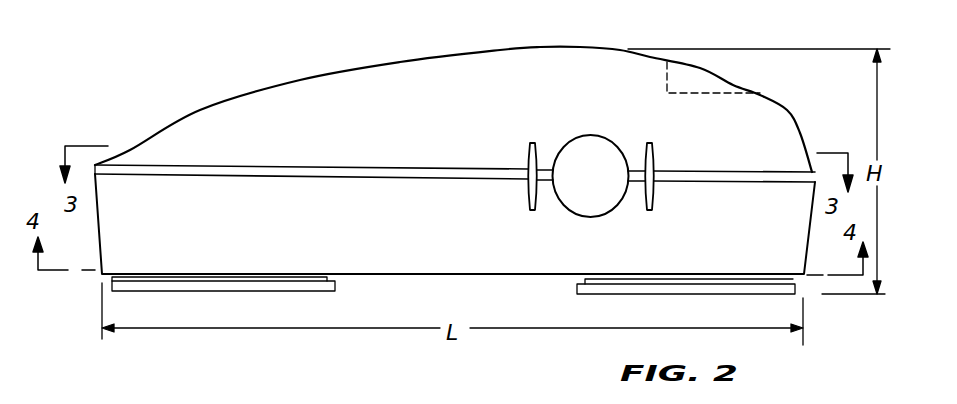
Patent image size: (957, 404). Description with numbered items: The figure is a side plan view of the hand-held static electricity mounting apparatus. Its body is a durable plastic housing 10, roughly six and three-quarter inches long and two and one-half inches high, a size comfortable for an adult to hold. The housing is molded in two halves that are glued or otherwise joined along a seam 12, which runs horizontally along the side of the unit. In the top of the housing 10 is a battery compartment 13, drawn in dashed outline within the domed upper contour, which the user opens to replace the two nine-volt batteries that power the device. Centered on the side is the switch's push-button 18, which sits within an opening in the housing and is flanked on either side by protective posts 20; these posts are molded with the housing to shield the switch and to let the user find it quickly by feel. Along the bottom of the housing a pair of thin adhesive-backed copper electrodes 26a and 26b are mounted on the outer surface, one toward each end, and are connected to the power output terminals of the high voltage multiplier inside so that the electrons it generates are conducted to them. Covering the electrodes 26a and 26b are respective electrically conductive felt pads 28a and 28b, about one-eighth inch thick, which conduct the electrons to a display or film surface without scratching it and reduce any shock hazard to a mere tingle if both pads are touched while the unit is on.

The housing 10 is at (823, 195).
The seam 12 is at (110, 171).
The battery compartment 13 is at (692, 78).
The push-button 18 is at (607, 187).
The protective posts 20 is at (528, 162).
The copper electrode 26a is at (108, 279).
The copper electrode 26b is at (798, 284).
The electrically conductive felt pad 28a is at (200, 289).
The electrically conductive felt pad 28b is at (753, 294).